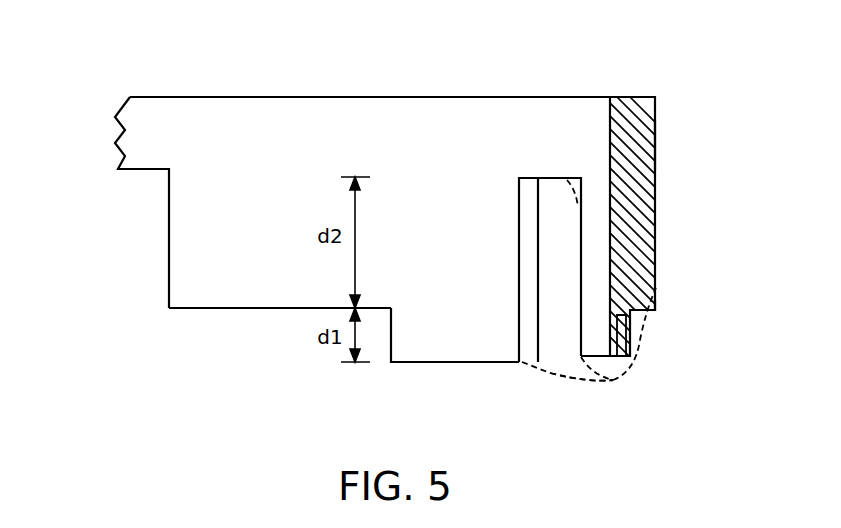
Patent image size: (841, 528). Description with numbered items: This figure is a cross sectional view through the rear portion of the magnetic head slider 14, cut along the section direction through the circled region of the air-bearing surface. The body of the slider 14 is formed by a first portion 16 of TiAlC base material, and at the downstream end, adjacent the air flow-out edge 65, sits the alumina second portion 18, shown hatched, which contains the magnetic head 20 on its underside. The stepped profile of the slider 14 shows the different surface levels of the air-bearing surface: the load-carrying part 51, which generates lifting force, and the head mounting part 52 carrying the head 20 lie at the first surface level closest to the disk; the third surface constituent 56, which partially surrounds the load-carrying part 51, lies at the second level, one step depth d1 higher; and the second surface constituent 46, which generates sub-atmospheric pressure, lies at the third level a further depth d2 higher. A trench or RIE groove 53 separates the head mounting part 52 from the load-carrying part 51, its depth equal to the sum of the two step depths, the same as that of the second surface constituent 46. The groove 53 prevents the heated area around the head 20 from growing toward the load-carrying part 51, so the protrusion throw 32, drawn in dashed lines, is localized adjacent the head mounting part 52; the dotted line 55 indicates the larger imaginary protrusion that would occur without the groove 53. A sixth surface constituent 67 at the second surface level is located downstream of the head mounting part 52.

The magnetic head slider 14 is at (338, 226).
The first portion 16 is at (254, 110).
The second portion 18 is at (635, 108).
The magnetic head 20 is at (618, 335).
The protrusion throw 32 is at (567, 180).
The second surface constituent 46 is at (137, 171).
The load-carrying part 51 is at (445, 363).
The head mounting part 52 is at (581, 356).
The groove 53 is at (538, 178).
The dotted line 55 is at (557, 373).
The third surface constituent 56 is at (248, 310).
The air flow-out edge 65 is at (655, 145).
The sixth surface constituent 67 is at (643, 303).